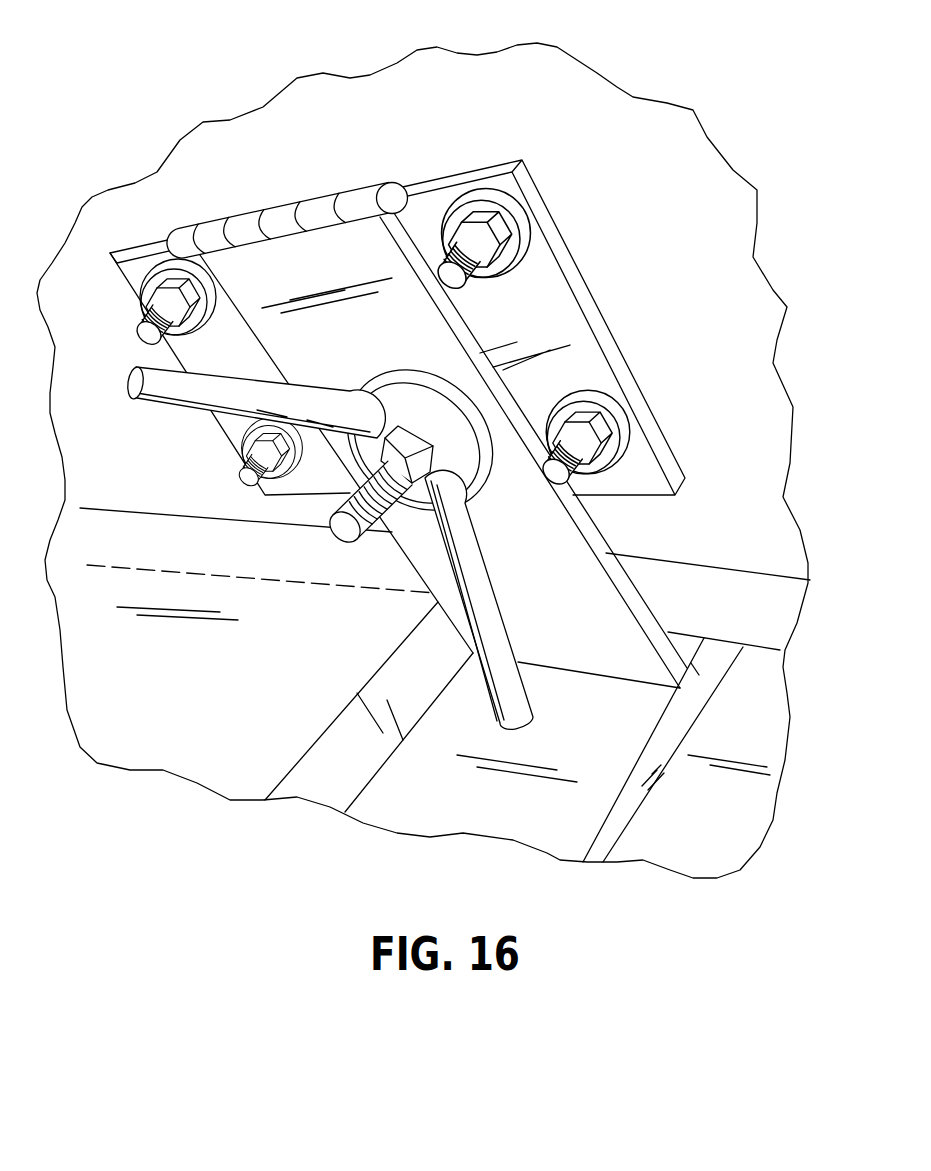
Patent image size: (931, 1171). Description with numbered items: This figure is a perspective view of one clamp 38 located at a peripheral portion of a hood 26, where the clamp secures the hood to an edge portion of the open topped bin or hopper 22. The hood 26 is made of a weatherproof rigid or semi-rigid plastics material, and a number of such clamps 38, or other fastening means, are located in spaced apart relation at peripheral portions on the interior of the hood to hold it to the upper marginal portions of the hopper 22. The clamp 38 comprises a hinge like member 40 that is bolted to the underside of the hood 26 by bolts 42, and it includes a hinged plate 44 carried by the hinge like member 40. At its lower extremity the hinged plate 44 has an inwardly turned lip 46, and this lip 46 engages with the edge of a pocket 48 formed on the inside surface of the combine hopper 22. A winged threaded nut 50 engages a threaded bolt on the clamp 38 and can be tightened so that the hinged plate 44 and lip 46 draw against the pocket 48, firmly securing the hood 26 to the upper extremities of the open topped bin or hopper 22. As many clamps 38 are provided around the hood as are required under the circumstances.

The open topped bin or hopper 22 is at (188, 688).
The hood 26 is at (663, 197).
The clamp 38 is at (377, 401).
The hinge like member 40 is at (243, 360).
The bolt 42 is at (134, 318).
The hinged plate 44 is at (567, 598).
The inwardly turned lip 46 is at (693, 664).
The pocket 48 is at (712, 657).
The winged threaded nut 50 is at (450, 557).